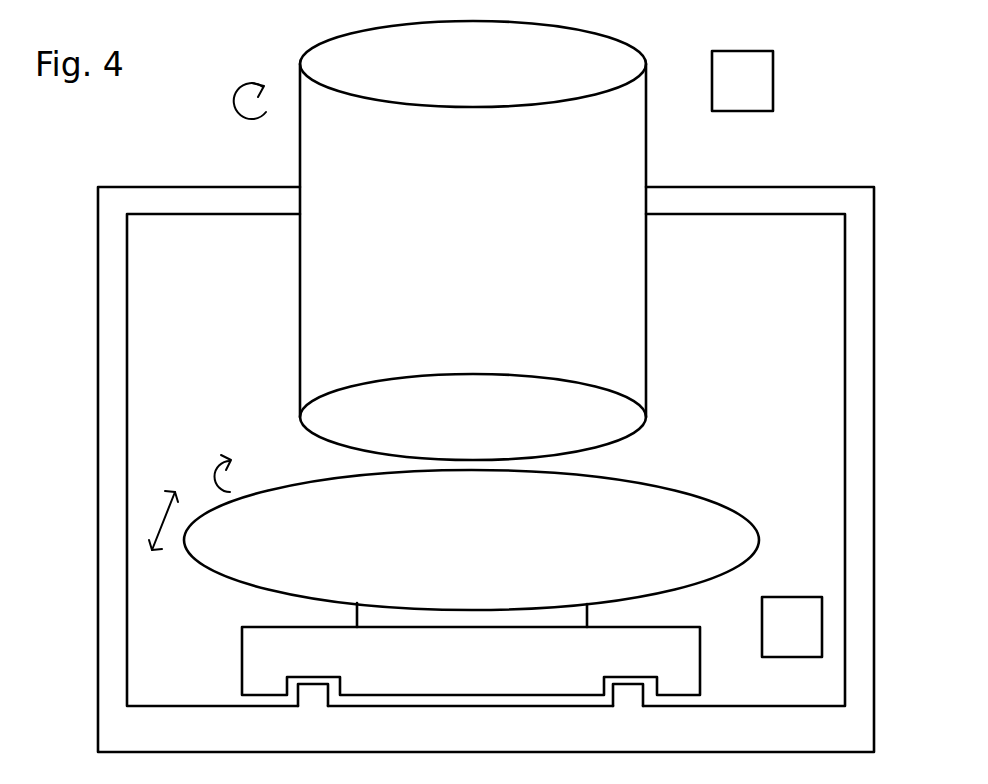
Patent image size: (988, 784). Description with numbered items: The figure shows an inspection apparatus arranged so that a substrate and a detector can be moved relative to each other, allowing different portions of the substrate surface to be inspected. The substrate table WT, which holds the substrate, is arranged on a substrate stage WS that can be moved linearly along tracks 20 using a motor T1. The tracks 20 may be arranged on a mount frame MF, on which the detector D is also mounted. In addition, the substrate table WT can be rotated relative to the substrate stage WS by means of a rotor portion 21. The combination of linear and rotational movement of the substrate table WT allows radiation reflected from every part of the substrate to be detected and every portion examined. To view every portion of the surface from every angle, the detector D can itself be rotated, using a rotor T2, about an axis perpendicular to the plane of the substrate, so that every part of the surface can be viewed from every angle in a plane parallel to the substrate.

The mount frame MF is at (874, 293).
The detector D is at (646, 131).
The rotor T2 is at (712, 70).
The substrate table WT is at (300, 482).
The rotor portion 21 is at (353, 618).
The substrate stage WS is at (700, 665).
The tracks 20 is at (611, 688).
The motor T1 is at (762, 612).